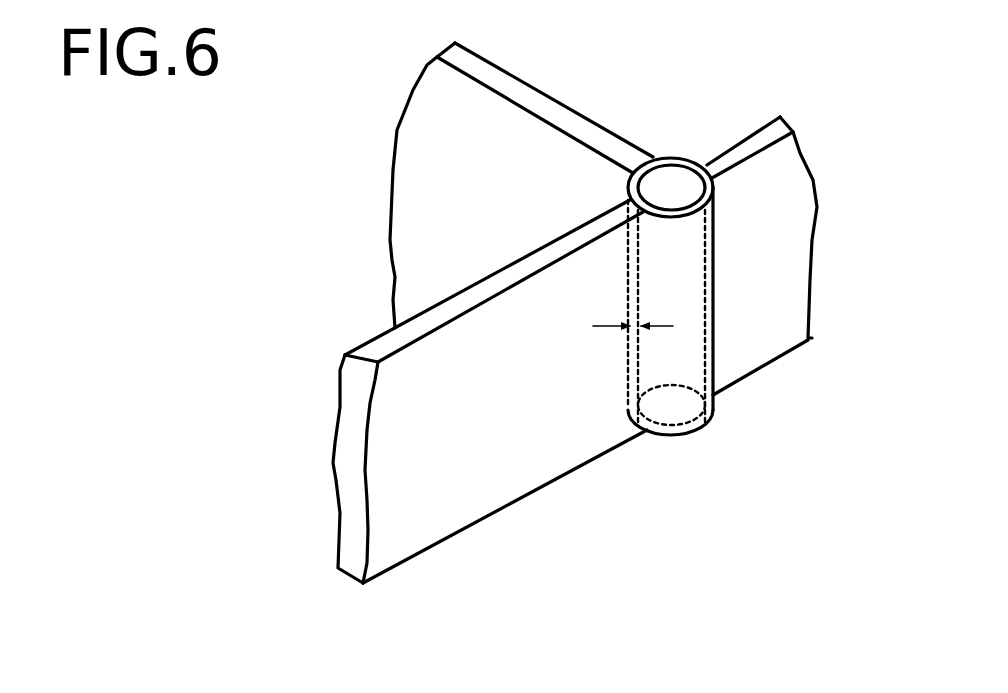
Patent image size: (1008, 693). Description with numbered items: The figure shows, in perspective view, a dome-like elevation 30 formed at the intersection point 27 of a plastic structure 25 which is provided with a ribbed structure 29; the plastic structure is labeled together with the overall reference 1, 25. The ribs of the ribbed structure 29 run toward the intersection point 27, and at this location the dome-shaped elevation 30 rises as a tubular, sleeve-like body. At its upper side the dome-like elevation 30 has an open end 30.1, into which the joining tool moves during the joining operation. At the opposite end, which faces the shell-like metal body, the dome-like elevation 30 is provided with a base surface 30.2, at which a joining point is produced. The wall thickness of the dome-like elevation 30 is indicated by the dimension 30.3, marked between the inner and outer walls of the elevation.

The structural assembly 1 is at (604, 337).
The plastic structure 25 is at (433, 520).
The intersection point 27 is at (667, 128).
The ribbed structure 29 is at (547, 255).
The dome-shaped elevation 30 is at (689, 264).
The open end 30.1 is at (672, 193).
The base surface 30.2 is at (670, 435).
The wall thickness 30.3 is at (632, 328).